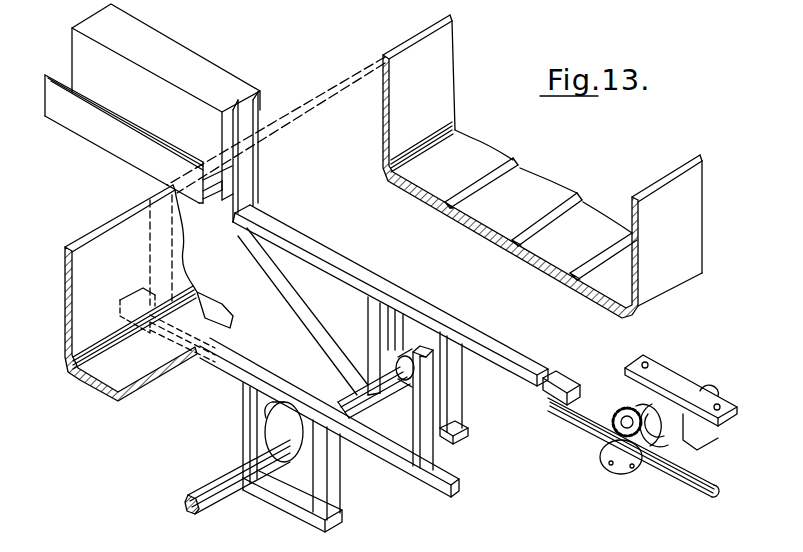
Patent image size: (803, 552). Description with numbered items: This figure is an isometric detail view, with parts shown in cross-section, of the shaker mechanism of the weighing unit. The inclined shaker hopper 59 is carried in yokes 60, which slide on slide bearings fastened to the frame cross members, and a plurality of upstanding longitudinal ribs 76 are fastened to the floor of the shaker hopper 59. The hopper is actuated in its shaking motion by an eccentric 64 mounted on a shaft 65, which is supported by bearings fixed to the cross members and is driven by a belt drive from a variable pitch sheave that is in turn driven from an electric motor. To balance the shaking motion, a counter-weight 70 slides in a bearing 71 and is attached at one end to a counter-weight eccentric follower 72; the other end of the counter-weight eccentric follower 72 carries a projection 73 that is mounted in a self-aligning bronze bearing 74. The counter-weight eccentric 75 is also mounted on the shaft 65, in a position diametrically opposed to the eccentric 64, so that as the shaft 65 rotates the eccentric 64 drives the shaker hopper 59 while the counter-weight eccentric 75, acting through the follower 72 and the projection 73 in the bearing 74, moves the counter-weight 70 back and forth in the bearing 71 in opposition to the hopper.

The shaker hopper 59 is at (448, 113).
The yokes 60 is at (423, 458).
The eccentric 64 is at (275, 422).
The shaft 65 is at (228, 490).
The counter-weight 70 is at (168, 45).
The bearing 71 is at (75, 125).
The counter-weight eccentric follower 72 is at (530, 372).
The projection 73 is at (597, 403).
The self-aligning bronze bearing 74 is at (603, 462).
The counter-weight eccentric 75 is at (395, 362).
The upstanding longitudinal ribs 76 is at (577, 193).